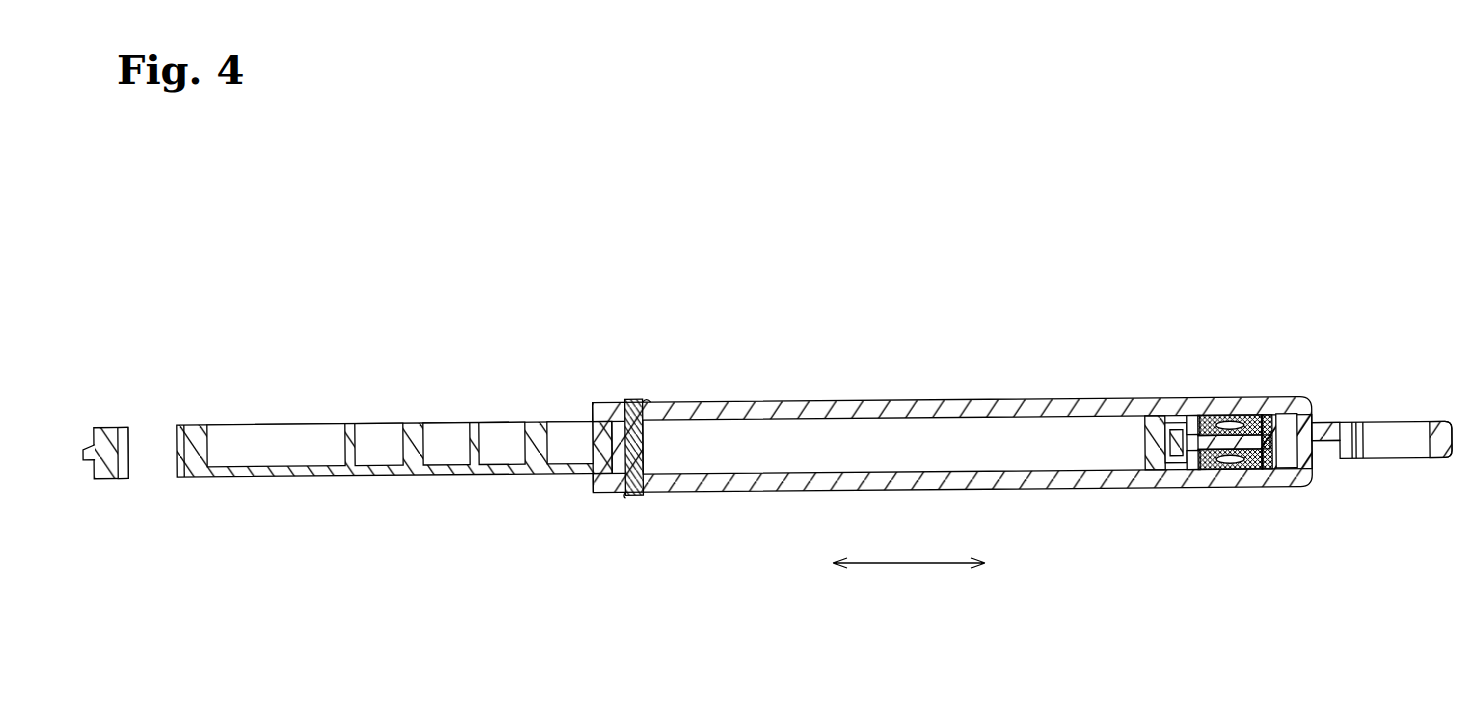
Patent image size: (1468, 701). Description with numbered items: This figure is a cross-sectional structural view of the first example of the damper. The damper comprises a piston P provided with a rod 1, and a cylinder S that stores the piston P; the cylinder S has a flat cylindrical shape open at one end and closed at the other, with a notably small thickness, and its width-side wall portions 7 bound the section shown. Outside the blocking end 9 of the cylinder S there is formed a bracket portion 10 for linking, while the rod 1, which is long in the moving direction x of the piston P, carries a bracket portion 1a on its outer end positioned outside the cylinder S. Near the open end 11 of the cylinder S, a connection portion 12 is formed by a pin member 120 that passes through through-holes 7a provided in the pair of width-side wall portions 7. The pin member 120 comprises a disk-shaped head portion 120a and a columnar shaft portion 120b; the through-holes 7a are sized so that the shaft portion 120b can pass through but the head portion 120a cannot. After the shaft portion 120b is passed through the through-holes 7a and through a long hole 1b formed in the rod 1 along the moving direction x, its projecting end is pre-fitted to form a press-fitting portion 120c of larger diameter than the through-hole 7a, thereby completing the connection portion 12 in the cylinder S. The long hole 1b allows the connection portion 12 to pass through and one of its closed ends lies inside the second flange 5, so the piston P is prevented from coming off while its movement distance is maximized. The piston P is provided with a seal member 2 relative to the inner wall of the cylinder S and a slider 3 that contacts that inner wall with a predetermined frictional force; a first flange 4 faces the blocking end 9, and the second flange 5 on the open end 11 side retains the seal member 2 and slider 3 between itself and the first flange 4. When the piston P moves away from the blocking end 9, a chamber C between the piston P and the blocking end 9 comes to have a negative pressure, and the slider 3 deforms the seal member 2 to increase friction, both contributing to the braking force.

The rod 1 is at (413, 420).
The bracket portion 1a is at (110, 480).
The long hole 1b is at (868, 490).
The seal member 2 is at (1255, 400).
The slider 3 is at (1207, 397).
The first flange 4 is at (1282, 487).
The second flange 5 is at (1188, 487).
The width-side wall portions 7 is at (955, 400).
The through-holes 7a is at (660, 402).
The blocking end 9 is at (1318, 482).
The bracket portion 10 is at (1443, 410).
The open end 11 is at (590, 480).
The connection portion 12 is at (577, 410).
The pin member 120 is at (634, 447).
The head portion 120a is at (635, 496).
The shaft portion 120b is at (634, 447).
The press-fitting portion 120c is at (628, 398).
The piston P is at (1228, 400).
The cylinder S is at (870, 400).
The chamber C is at (1312, 410).
The moving direction x is at (920, 566).